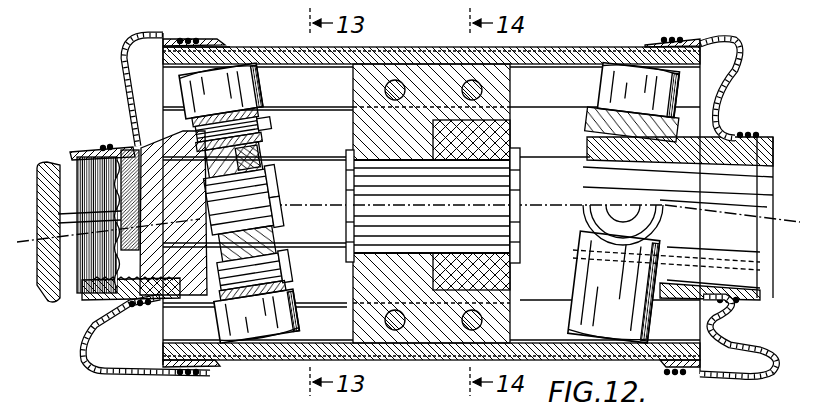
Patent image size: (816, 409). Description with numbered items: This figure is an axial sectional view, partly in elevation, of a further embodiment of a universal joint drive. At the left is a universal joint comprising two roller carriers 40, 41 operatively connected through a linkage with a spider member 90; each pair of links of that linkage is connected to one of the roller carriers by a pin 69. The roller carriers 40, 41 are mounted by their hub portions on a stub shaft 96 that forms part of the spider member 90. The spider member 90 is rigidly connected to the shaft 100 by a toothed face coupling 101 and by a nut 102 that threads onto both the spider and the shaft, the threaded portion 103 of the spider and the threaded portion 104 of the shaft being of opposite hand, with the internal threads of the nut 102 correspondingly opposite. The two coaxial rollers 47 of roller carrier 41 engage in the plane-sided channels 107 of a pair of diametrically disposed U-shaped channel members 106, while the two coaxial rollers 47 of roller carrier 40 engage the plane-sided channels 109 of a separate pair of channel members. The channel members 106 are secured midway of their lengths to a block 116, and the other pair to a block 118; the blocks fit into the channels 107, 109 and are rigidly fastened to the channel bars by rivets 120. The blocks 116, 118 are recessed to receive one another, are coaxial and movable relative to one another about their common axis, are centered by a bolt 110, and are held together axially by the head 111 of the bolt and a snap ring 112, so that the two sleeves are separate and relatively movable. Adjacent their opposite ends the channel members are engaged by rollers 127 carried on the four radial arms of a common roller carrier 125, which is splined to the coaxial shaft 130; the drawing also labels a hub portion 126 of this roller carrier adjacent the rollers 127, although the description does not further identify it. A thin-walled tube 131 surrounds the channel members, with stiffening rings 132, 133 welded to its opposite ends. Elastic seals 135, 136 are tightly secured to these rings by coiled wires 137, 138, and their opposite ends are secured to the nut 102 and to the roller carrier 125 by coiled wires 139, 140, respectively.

The roller carrier 40 is at (255, 151).
The roller carrier 41 is at (232, 258).
The rollers 47 is at (246, 90).
The pin 69 is at (268, 122).
The spider member 90 is at (153, 147).
The stub shaft 96 is at (266, 189).
The shaft 100 is at (54, 252).
The toothed face coupling 101 is at (120, 215).
The nut 102 is at (74, 151).
The threaded portion of the spider 103 is at (129, 150).
The threaded portion of the shaft 104 is at (80, 178).
The channel members 106 is at (356, 50).
The channels or grooves 107 is at (167, 352).
The channels or grooves 109 is at (332, 177).
The bolt 110 is at (506, 160).
The head of the bolt 111 is at (352, 222).
The snap ring 112 is at (514, 194).
The block 116 is at (368, 86).
The block 118 is at (500, 133).
The rivets 120 is at (470, 82).
The roller carrier 125 is at (664, 150).
The hub 126 is at (604, 125).
The rollers 127 is at (612, 92).
The shaft 130 is at (755, 194).
The thin-walled tube 131 is at (548, 50).
The ring 132 is at (222, 45).
The ring 133 is at (652, 44).
The elastic seal 135 is at (151, 32).
The elastic seal 136 is at (742, 48).
The coiled wire 137 is at (196, 38).
The coiled wire 138 is at (680, 37).
The coiled wire 139 is at (110, 145).
The coiled wire 140 is at (757, 132).